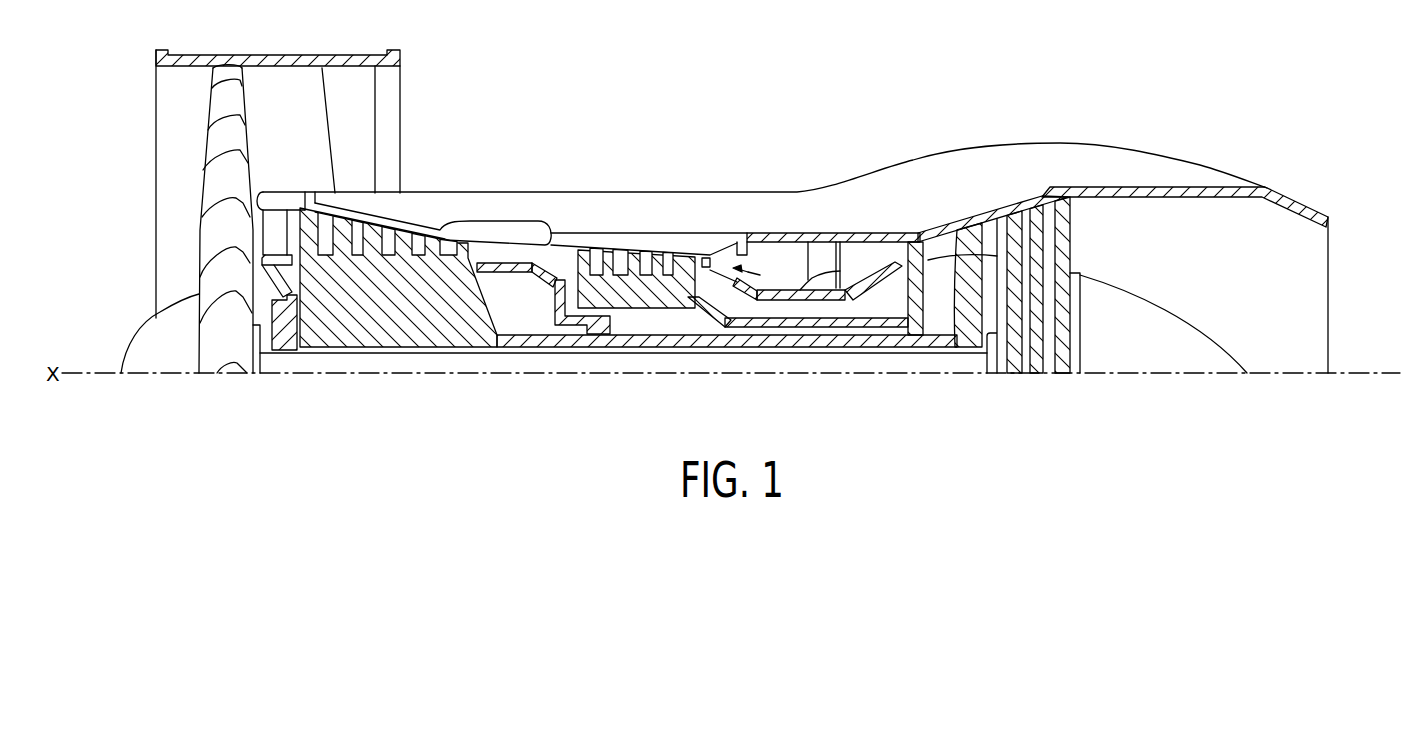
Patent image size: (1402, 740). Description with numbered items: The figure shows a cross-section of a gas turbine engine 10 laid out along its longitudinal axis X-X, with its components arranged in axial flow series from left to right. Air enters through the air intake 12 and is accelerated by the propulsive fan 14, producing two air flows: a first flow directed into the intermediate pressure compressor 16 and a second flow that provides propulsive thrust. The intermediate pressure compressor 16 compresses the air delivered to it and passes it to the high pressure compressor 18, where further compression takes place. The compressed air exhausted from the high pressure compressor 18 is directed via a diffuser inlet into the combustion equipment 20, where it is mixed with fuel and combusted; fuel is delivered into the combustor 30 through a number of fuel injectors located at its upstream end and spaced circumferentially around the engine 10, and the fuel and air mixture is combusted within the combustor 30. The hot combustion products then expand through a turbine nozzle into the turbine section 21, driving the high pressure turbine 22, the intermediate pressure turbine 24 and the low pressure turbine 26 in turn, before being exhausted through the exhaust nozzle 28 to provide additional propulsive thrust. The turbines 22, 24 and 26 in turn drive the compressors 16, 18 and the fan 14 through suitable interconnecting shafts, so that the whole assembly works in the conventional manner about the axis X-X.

The gas turbine engine 10 is at (636, 94).
The air intake 12 is at (138, 137).
The propulsive fan 14 is at (232, 100).
The intermediate pressure compressor 16 is at (415, 272).
The high pressure compressor 18 is at (626, 258).
The combustion equipment 20 is at (834, 222).
The turbine section 21 is at (1023, 392).
The high pressure turbine 22 is at (917, 240).
The intermediate pressure turbine 24 is at (977, 238).
The low pressure turbine 26 is at (1043, 248).
The exhaust nozzle 28 is at (1313, 308).
The combustor 30 is at (760, 275).